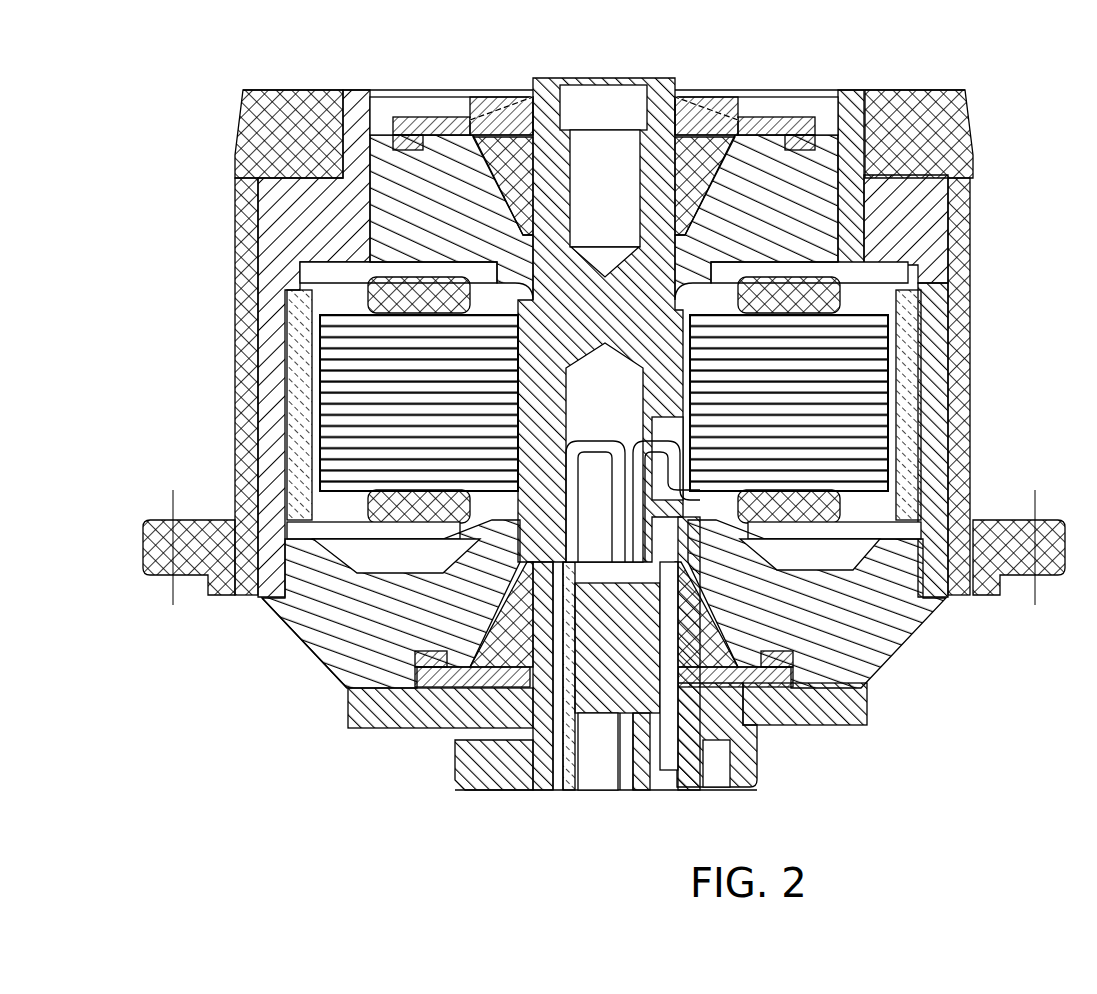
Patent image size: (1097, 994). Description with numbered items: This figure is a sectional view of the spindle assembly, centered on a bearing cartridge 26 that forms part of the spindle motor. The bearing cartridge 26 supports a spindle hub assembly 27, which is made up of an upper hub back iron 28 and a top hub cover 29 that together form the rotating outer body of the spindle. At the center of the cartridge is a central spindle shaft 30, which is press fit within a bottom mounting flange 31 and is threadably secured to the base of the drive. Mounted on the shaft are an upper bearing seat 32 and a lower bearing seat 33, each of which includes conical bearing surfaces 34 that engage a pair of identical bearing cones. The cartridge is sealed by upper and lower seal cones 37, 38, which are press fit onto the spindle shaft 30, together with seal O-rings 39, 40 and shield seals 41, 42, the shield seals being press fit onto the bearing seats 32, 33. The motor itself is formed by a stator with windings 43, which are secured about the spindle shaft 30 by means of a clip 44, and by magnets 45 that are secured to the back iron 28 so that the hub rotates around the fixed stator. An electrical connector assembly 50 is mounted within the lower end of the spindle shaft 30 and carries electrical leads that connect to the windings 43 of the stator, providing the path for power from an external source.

The bearing cartridge 26 is at (399, 78).
The spindle hub assembly 27 is at (233, 232).
The upper hub back iron 28 is at (273, 265).
The top hub cover 29 is at (243, 320).
The central spindle shaft 30 is at (565, 95).
The bottom mounting flange 31 is at (840, 722).
The upper bearing seat 32 is at (830, 125).
The lower bearing seat 33 is at (855, 603).
The conical bearing surfaces 34 is at (790, 207).
The upper seal cone 37 is at (497, 118).
The lower seal cone 38 is at (763, 722).
The seal O-ring 39 is at (800, 128).
The seal O-ring 40 is at (430, 668).
The shield seal 41 is at (415, 128).
The shield seal 42 is at (452, 672).
The stator windings 43 is at (350, 432).
The clip 44 is at (276, 607).
The magnets 45 is at (296, 358).
The electrical connector assembly 50 is at (589, 733).